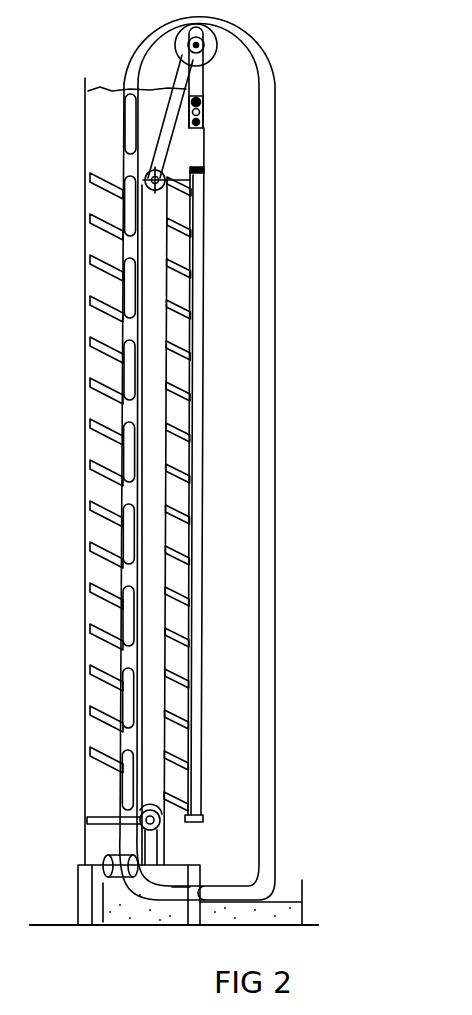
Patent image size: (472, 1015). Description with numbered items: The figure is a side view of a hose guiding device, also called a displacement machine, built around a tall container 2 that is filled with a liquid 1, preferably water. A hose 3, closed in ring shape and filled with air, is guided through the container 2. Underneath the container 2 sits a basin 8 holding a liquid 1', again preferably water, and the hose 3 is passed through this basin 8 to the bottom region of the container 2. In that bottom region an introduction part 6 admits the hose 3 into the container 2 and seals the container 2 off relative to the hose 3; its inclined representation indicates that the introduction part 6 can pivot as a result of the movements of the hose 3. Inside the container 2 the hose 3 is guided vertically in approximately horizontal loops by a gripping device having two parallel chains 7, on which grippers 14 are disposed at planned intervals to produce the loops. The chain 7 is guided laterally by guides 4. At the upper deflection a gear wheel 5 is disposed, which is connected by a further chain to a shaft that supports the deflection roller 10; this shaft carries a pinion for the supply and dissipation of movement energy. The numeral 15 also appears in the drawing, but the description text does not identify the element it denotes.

The liquid 1 is at (108, 461).
The liquid 1' is at (209, 886).
The container 2 is at (205, 205).
The hose 3 is at (132, 207).
The guides 4 is at (143, 172).
The gear wheel 5 is at (148, 180).
The introduction part 6 is at (98, 862).
The chains 7 is at (137, 803).
The basin 8 is at (302, 917).
The deflection roller 10 is at (216, 43).
The grippers 14 is at (100, 395).
The bearing bracket 15 is at (204, 117).